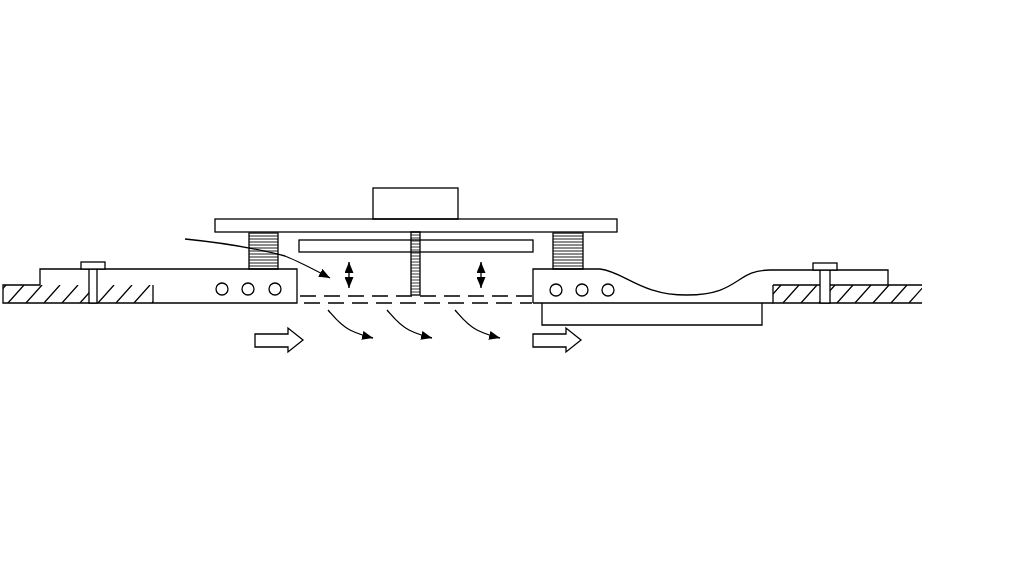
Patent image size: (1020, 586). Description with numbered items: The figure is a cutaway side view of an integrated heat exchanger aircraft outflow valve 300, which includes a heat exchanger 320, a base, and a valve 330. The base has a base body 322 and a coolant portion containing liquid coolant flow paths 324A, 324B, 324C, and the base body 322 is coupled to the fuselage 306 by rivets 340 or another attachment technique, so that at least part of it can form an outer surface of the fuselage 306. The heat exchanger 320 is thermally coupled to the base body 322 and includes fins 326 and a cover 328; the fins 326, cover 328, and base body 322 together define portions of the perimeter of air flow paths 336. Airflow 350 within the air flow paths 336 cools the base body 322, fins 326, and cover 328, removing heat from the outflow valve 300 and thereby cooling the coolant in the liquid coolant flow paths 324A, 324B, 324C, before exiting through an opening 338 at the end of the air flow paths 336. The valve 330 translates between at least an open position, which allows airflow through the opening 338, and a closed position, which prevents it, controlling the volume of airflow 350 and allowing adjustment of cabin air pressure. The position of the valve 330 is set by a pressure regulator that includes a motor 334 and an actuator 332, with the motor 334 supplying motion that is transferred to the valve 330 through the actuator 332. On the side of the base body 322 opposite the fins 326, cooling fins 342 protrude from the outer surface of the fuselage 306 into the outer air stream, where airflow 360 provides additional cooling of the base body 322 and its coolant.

The outflow valve 300 is at (215, 47).
The fuselage 306 is at (50, 304).
The heat exchanger 320 is at (577, 220).
The base body 322 is at (655, 288).
The liquid coolant flow path 324A is at (216, 295).
The liquid coolant flow path 324B is at (245, 296).
The liquid coolant flow path 324C is at (279, 296).
The fins 326 is at (583, 252).
The cover 328 is at (261, 224).
The valve 330 is at (503, 240).
The actuator 332 is at (407, 261).
The motor 334 is at (414, 193).
The air flow paths 336 is at (584, 257).
The opening 338 is at (520, 303).
The rivets 340 is at (95, 262).
The fins 342 is at (763, 310).
The airflow 350 is at (324, 320).
The airflow 360 is at (552, 348).